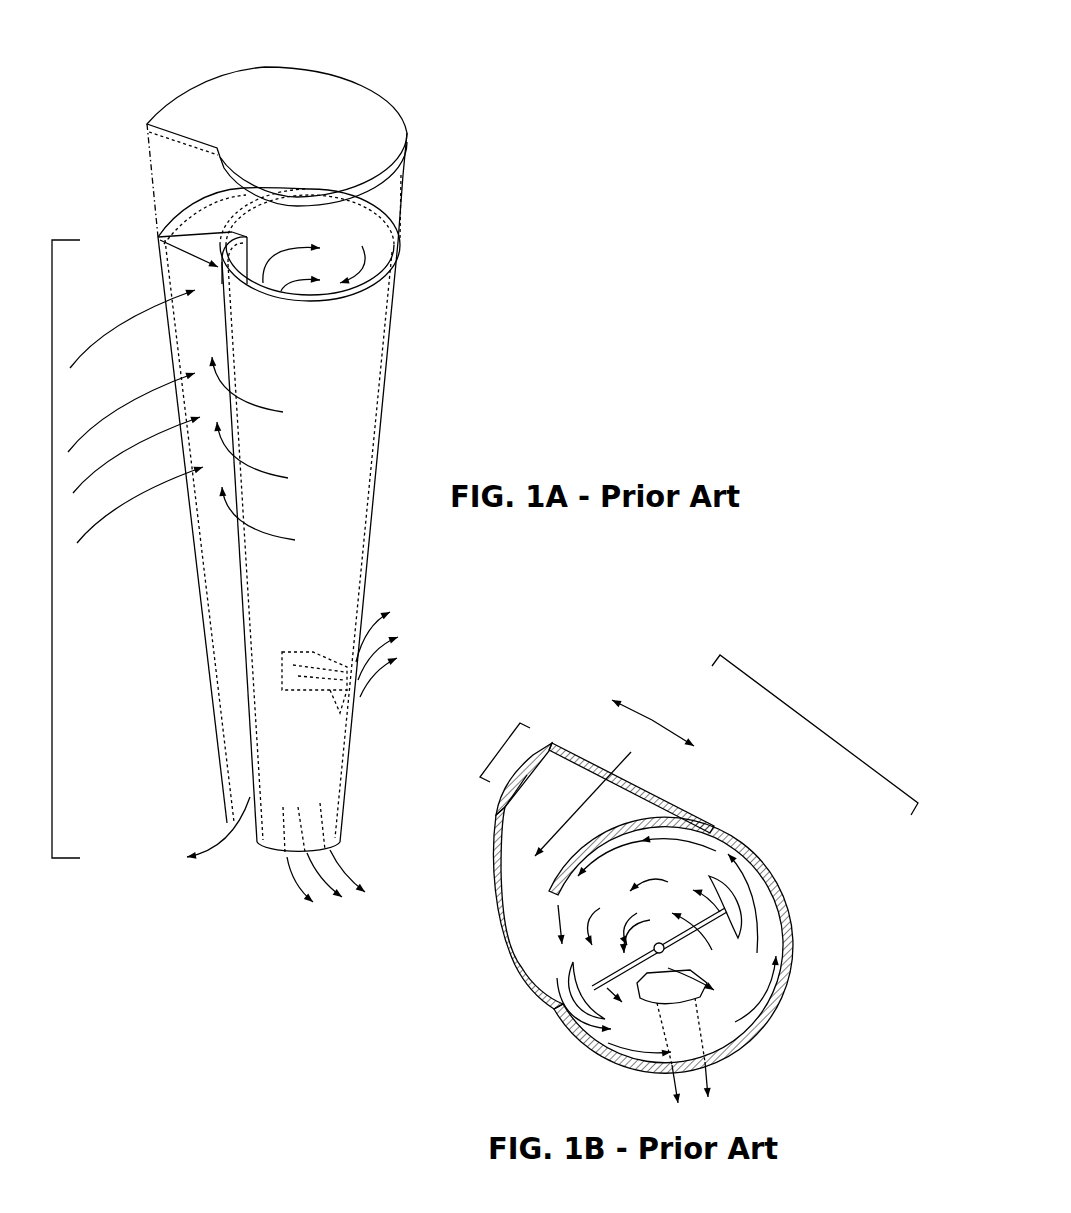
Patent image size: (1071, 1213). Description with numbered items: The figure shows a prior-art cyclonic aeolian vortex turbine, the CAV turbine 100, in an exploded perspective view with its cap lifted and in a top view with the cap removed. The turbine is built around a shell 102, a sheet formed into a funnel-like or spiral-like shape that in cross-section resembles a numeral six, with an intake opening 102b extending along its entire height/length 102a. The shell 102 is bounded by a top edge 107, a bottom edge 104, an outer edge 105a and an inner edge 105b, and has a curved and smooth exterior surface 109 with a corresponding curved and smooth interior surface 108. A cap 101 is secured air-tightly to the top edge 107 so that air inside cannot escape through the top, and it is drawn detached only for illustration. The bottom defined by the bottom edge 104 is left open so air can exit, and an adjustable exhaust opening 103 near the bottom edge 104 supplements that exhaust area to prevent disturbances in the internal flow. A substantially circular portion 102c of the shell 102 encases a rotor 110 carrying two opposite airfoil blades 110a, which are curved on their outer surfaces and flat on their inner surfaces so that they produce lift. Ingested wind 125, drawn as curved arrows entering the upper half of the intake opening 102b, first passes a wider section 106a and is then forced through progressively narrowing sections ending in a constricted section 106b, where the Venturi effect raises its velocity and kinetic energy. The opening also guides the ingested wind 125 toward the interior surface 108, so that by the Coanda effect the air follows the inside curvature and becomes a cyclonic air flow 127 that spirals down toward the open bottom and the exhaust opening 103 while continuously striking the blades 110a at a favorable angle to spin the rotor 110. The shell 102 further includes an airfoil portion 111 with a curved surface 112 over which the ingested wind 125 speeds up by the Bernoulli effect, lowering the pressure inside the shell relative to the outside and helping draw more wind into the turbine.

In FIG. 1A, the CAV turbine 100 is at (531, 144).
In FIG. 1A, the cap 101 is at (379, 85).
In FIG. 1A, the shell 102 is at (397, 371).
In FIG. 1B, the shell 102 is at (504, 944).
In FIG. 1A, the height/length of the shell 102a is at (42, 549).
In FIG. 1A, the intake opening 102b is at (220, 567).
In FIG. 1B, the substantially circular portion 102c is at (819, 728).
In FIG. 1A, the exhaust opening 103 is at (337, 694).
In FIG. 1B, the exhaust opening 103 is at (703, 1002).
In FIG. 1A, the bottom edge 104 is at (272, 857).
In FIG. 1A, the outer edge 105a is at (172, 364).
In FIG. 1B, the outer edge 105a is at (643, 786).
In FIG. 1A, the inner edge 105b is at (248, 237).
In FIG. 1A, the wider section 106a is at (163, 241).
In FIG. 1B, the wider section 106a is at (656, 720).
In FIG. 1A, the constricted section 106b is at (236, 230).
In FIG. 1B, the constricted section 106b is at (551, 895).
In FIG. 1A, the top edge 107 is at (403, 262).
In FIG. 1A, the interior surface 108 is at (238, 231).
In FIG. 1B, the interior surface 108 is at (713, 838).
In FIG. 1A, the exterior surface 109 is at (367, 440).
In FIG. 1B, the rotor 110 is at (702, 924).
In FIG. 1B, the airfoil blades 110a is at (753, 924).
In FIG. 1B, the airfoil portion 111 is at (509, 769).
In FIG. 1B, the curved surface 112 is at (531, 773).
In FIG. 1A, the ingested wind 125 is at (228, 502).
In FIG. 1B, the ingested wind 125 is at (586, 794).
In FIG. 1B, the cyclonic air flow 127 is at (765, 868).